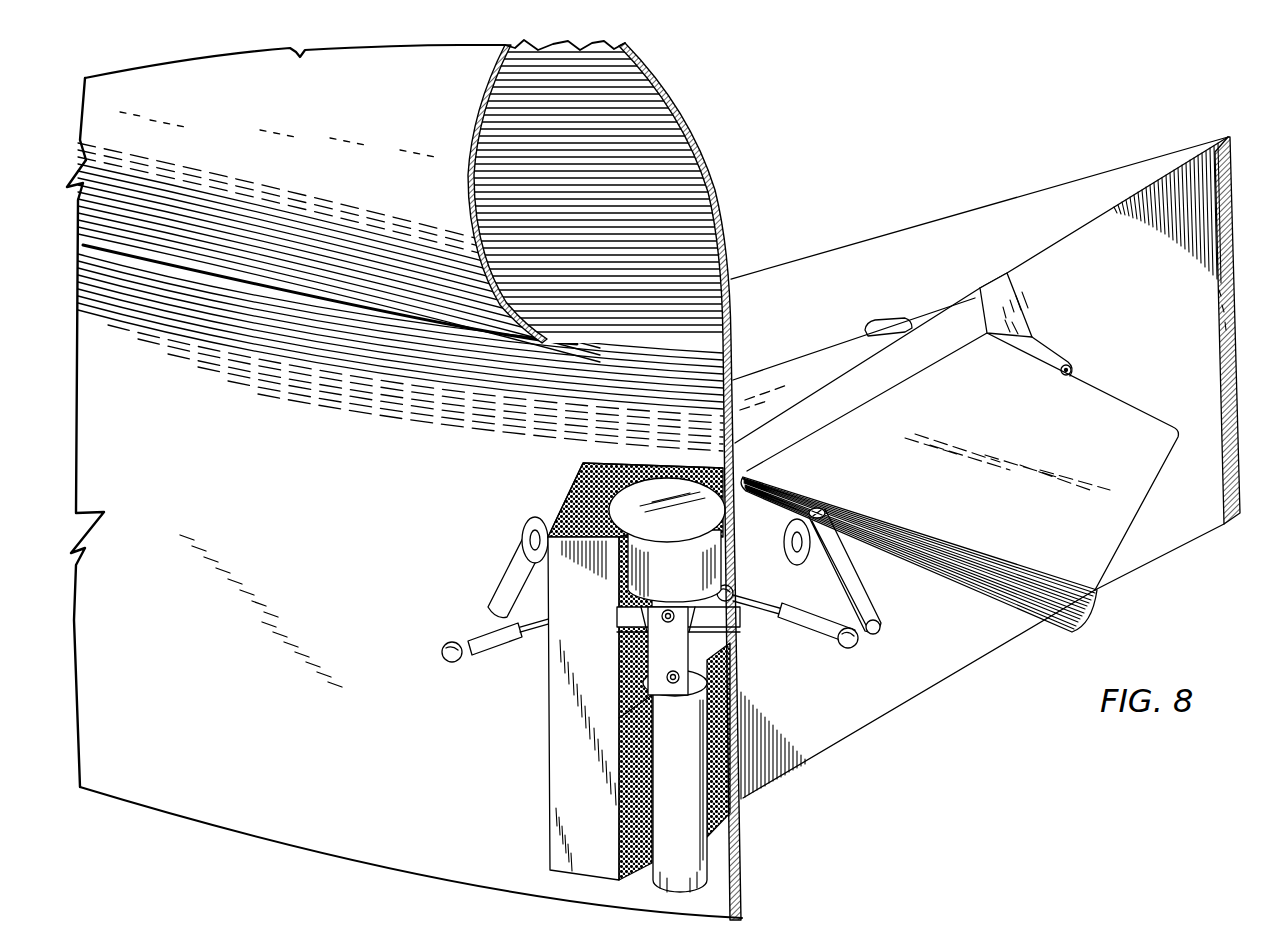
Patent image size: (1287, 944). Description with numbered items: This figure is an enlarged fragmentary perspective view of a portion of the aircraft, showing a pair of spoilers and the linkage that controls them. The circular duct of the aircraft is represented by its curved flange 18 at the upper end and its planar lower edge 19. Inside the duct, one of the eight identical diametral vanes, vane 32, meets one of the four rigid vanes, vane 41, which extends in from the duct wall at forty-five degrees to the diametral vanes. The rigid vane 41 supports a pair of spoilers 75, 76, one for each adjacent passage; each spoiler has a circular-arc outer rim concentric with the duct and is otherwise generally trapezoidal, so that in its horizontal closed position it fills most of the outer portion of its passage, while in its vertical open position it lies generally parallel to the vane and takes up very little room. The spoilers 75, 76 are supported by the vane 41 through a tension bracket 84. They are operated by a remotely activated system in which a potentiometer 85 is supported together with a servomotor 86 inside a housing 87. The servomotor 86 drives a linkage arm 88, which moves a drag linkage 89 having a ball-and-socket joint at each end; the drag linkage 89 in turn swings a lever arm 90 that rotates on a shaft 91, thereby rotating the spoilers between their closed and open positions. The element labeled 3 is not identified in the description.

The curved flange 18 is at (472, 113).
The planar lower edge 19 is at (577, 346).
The vane 32 is at (965, 253).
The vane 41 is at (1069, 296).
The wing tip edge 3 is at (1240, 500).
The spoiler 75 is at (797, 373).
The spoiler 76 is at (951, 400).
The tension bracket 84 is at (892, 328).
The potentiometer 85 is at (707, 556).
The servomotor 86 is at (665, 749).
The housing 87 is at (558, 735).
The linkage arm 88 is at (660, 664).
The drag linkage 89 is at (788, 613).
The lever arm 90 is at (870, 597).
The shaft 91 is at (788, 526).